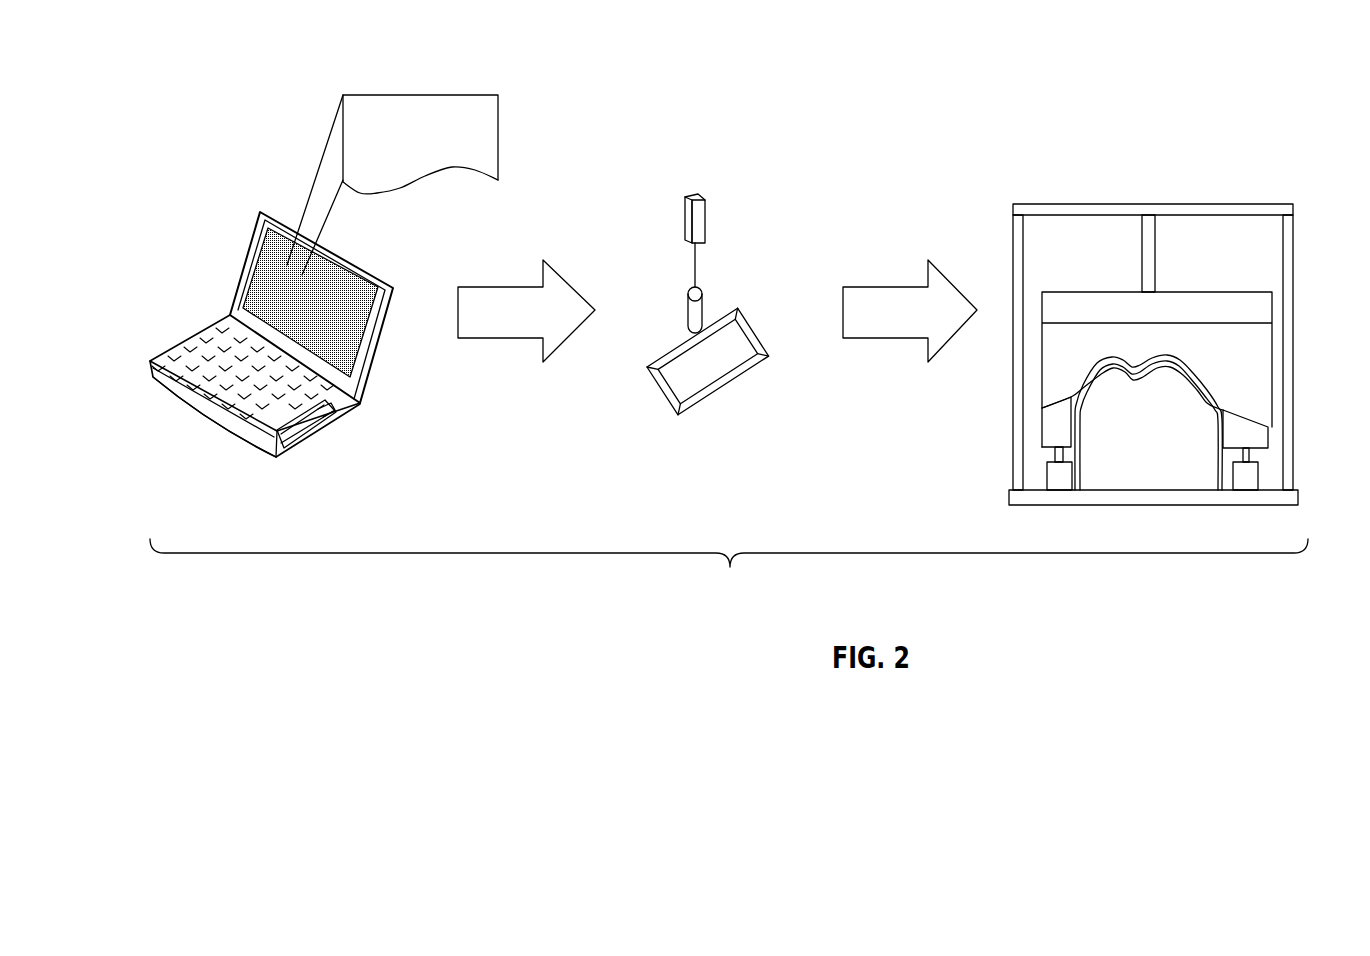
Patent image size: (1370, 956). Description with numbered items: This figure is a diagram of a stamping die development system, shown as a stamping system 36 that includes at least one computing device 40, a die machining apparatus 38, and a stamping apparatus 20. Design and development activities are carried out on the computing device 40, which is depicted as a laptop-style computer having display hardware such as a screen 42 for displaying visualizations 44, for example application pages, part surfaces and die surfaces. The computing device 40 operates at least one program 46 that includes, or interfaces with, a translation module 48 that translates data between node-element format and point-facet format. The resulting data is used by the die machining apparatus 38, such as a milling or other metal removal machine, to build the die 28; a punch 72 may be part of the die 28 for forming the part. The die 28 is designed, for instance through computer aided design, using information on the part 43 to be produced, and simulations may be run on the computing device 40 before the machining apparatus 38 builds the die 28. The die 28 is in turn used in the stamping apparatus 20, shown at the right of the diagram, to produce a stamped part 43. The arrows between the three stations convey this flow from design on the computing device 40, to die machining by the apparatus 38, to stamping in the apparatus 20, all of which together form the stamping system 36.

The stamping apparatus 20 is at (1184, 289).
The die 28 is at (1276, 355).
The stamping system 36 is at (729, 577).
The die machining apparatus 38 is at (704, 188).
The computing device 40 is at (287, 365).
The screen 42 is at (336, 333).
The stamped part 43 is at (1201, 380).
The visualization 44 is at (428, 150).
The program 46 is at (335, 407).
The translation module 48 is at (297, 440).
The punch 72 is at (732, 356).